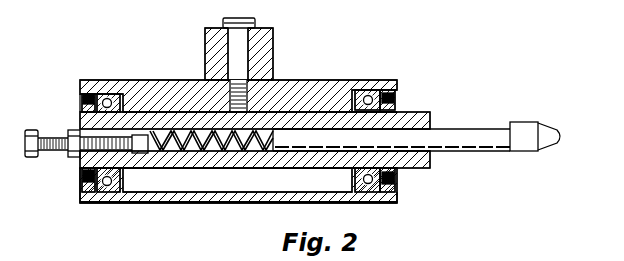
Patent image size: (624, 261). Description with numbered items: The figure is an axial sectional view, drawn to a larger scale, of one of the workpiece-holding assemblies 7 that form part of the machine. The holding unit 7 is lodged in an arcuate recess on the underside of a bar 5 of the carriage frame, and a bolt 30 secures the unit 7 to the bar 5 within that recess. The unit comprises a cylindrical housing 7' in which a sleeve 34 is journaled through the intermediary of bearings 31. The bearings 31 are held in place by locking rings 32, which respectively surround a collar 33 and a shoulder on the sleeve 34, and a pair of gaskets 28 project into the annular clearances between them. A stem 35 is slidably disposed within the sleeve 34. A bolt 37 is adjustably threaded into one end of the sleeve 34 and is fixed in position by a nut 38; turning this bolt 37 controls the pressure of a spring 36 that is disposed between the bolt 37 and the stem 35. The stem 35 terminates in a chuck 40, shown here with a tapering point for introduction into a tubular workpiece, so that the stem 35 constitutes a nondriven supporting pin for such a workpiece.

The bar 5 is at (264, 57).
The workpiece-holding assembly 7 is at (238, 66).
The cylindrical housing 7' is at (238, 124).
The gaskets 28 is at (89, 96).
The bolts 30 is at (223, 25).
The bearings 31 is at (112, 187).
The locking rings 32 is at (80, 204).
The collar 33 is at (84, 108).
The sleeve 34 is at (193, 160).
The stem 35 is at (452, 136).
The spring 36 is at (242, 141).
The bolt 37 is at (29, 161).
The nut 38 is at (71, 160).
The chuck 40 is at (520, 131).